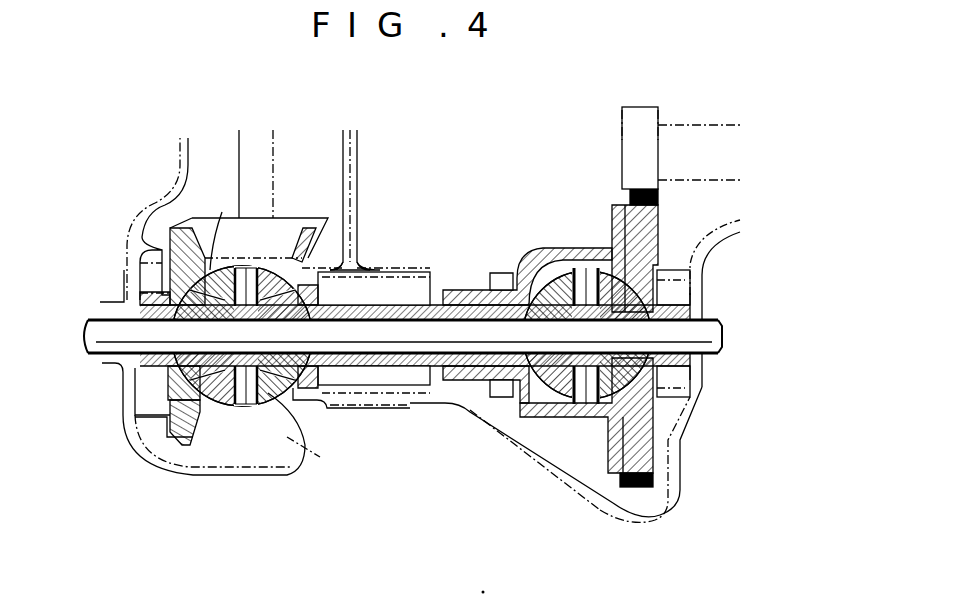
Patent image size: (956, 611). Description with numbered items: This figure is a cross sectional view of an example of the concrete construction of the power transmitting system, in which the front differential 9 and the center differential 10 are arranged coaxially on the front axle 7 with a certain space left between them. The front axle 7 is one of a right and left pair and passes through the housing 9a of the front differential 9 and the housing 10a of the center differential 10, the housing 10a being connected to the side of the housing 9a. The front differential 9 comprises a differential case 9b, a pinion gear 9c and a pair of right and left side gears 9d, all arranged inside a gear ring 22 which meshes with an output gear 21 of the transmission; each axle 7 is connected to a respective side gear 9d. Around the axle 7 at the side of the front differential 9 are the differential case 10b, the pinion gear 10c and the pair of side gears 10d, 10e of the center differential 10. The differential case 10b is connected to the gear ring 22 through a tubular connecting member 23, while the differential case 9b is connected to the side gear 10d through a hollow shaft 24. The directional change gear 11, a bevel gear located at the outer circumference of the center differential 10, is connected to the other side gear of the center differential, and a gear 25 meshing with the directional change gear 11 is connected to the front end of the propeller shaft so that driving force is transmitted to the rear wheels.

The front axle 7 is at (86, 342).
The front differential 9 is at (524, 250).
The housing 9a is at (630, 513).
The differential case 9b is at (503, 433).
The pinion gear 9c is at (567, 417).
The side gear 9d is at (556, 292).
The center differential 10 is at (288, 410).
The housing 10a is at (130, 405).
The differential case 10b is at (281, 272).
The pinion gear 10c is at (196, 233).
The side gear 10d is at (270, 408).
The side gear 10e is at (210, 402).
The directional change gear 11 is at (193, 470).
The output gear 21 is at (622, 110).
The gear ring 22 is at (653, 220).
The tubular connecting member 23 is at (401, 298).
The hollow shaft 24 is at (401, 386).
The gear 25 is at (351, 215).